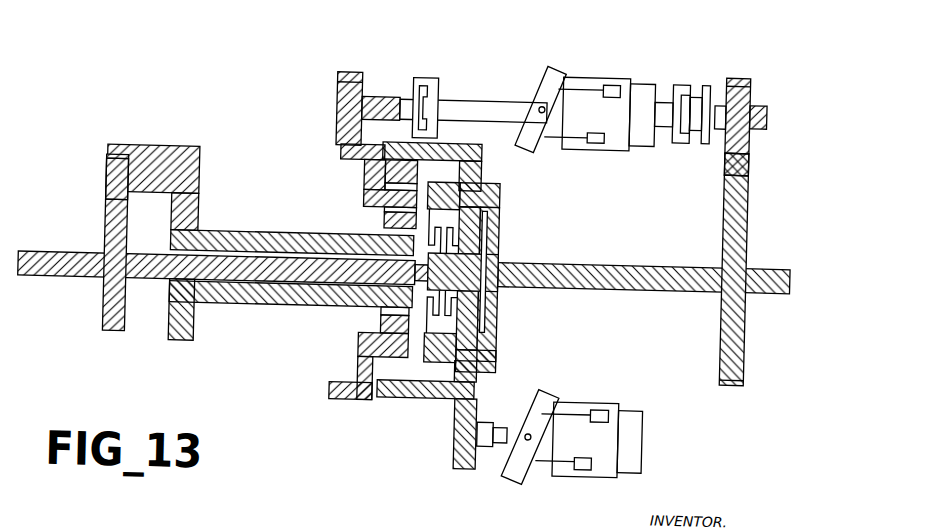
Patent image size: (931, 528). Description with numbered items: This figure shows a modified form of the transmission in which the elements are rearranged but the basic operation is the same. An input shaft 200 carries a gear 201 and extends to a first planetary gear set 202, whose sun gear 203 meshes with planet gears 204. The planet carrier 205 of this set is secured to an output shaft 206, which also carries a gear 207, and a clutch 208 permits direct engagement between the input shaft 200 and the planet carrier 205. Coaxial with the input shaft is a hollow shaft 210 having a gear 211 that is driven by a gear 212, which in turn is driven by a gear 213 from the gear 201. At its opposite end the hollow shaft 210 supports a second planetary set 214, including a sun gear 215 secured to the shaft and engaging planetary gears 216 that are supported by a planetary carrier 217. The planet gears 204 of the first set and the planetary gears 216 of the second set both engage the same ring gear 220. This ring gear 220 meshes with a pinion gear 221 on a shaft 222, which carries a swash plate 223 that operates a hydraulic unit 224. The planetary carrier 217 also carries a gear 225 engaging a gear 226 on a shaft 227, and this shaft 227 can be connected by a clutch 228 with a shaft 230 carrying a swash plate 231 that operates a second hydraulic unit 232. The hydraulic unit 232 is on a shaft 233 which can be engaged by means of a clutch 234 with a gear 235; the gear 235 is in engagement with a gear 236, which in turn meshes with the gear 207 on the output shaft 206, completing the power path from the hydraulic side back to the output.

The input shaft 200 is at (268, 271).
The gear 201 is at (106, 319).
The first planetary gear set 202 is at (489, 222).
The sun gear 203 is at (480, 247).
The planet gears 204 is at (498, 174).
The planet carrier 205 is at (490, 185).
The output shaft 206 is at (620, 254).
The gear 207 is at (726, 334).
The clutch 208 is at (481, 290).
The hollow shaft 210 is at (251, 228).
The gear 211 is at (194, 334).
The gear 212 is at (187, 162).
The gear 213 is at (102, 186).
The second planetary set 214 is at (381, 204).
The sun gear 215 is at (381, 304).
The planetary gears 216 is at (383, 318).
The planetary carrier 217 is at (360, 173).
The ring gear 220 is at (457, 140).
The pinion gear 221 is at (457, 444).
The shaft 222 is at (511, 409).
The swash plate 223 is at (548, 383).
The hydraulic unit 224 is at (650, 422).
The gear 225 is at (337, 143).
The gear 226 is at (333, 89).
The shaft 227 is at (368, 88).
The clutch 228 is at (428, 71).
The shaft 230 is at (474, 94).
The swash plate 231 is at (547, 54).
The hydraulic unit 232 is at (588, 67).
The shaft 233 is at (660, 85).
The clutch 234 is at (681, 127).
The gear 235 is at (744, 68).
The gear 236 is at (723, 149).